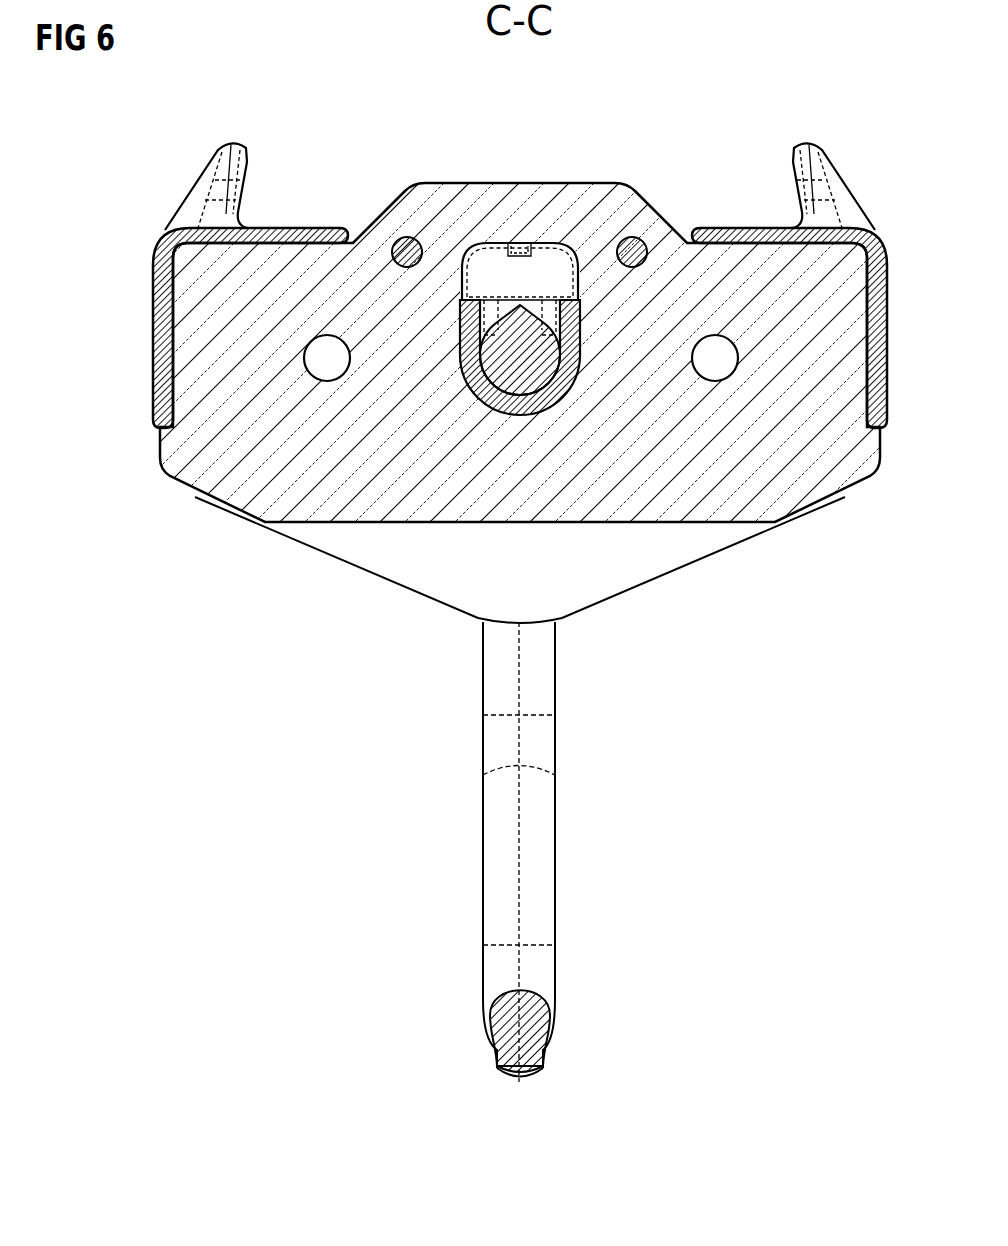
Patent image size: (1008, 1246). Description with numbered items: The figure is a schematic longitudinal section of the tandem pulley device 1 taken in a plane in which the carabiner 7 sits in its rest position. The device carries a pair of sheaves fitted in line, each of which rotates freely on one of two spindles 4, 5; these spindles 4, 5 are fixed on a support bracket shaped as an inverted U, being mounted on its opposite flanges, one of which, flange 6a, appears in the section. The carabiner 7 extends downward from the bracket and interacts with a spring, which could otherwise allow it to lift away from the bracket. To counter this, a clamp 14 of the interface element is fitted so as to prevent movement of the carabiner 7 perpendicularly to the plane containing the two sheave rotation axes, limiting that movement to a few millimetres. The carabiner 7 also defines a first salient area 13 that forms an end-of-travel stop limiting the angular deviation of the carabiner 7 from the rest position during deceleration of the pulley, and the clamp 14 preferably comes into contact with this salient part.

The tandem pulley device 1 is at (504, 578).
The spindle 4 is at (327, 358).
The spindle 5 is at (715, 358).
The flange 6a is at (640, 583).
The carabiner 7 is at (527, 357).
The first salient area 13 is at (498, 315).
The clamp 14 is at (527, 275).